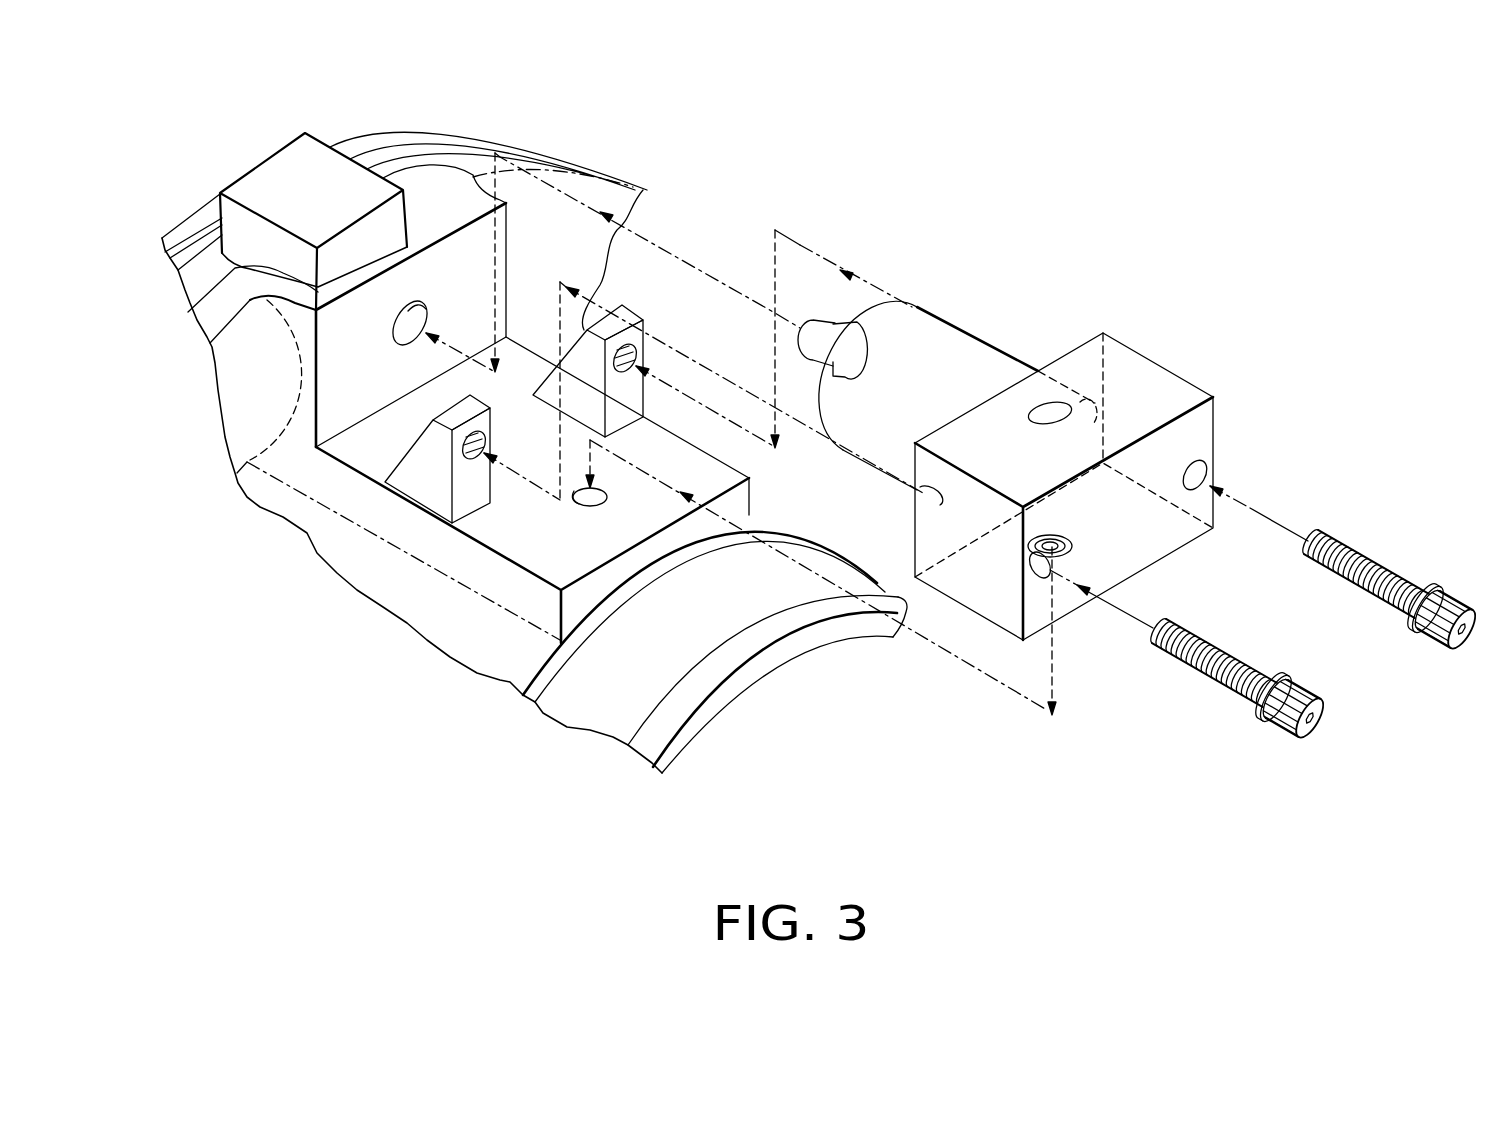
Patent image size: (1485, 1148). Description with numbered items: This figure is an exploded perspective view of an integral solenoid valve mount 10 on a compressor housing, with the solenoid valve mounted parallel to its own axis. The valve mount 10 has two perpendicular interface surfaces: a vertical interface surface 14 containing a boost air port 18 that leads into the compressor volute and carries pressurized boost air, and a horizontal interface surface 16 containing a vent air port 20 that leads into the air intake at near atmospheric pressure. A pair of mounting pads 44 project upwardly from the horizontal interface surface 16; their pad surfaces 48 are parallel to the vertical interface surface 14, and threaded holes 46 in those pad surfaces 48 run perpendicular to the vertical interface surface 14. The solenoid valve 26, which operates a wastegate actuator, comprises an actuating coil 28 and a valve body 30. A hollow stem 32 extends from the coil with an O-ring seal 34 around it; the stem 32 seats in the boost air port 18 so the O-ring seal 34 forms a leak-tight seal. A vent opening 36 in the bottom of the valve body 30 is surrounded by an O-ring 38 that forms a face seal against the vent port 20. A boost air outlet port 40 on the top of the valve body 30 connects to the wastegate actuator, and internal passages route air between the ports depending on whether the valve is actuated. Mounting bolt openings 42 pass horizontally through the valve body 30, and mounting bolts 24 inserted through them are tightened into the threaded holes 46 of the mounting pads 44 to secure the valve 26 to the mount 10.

The valve mount 10 is at (521, 250).
The vertical interface surface 14 is at (362, 393).
The horizontal interface surface 16 is at (384, 457).
The boost air port 18 is at (413, 304).
The vent air port 20 is at (588, 500).
The mounting bolts 24 is at (1303, 694).
The solenoid valve 26 is at (976, 334).
The actuating coil 28 is at (884, 421).
The valve body 30 is at (1198, 430).
The hollow stem 32 is at (816, 322).
The O-ring seal 34 is at (858, 330).
The vent opening 36 is at (1052, 535).
The O-ring 38 is at (1075, 548).
The boost air outlet port 40 is at (1037, 418).
The mounting bolt openings 42 is at (1204, 472).
The mounting pads 44 is at (434, 494).
The threaded holes 46 is at (468, 452).
The pad surfaces 48 is at (471, 498).